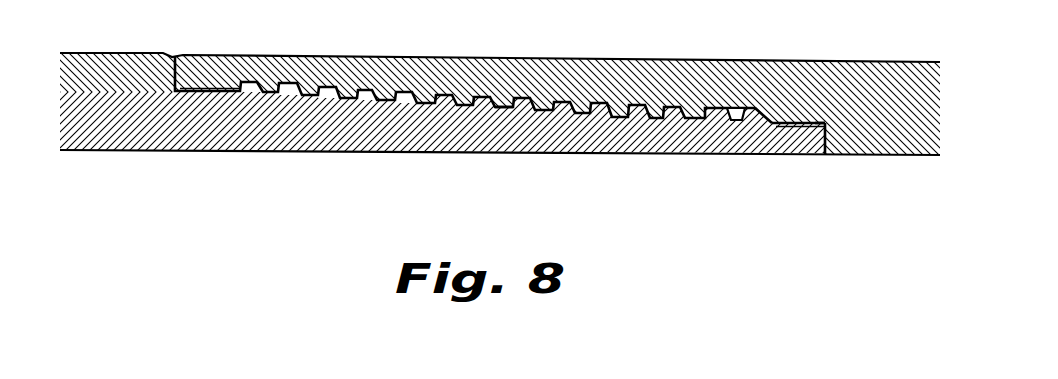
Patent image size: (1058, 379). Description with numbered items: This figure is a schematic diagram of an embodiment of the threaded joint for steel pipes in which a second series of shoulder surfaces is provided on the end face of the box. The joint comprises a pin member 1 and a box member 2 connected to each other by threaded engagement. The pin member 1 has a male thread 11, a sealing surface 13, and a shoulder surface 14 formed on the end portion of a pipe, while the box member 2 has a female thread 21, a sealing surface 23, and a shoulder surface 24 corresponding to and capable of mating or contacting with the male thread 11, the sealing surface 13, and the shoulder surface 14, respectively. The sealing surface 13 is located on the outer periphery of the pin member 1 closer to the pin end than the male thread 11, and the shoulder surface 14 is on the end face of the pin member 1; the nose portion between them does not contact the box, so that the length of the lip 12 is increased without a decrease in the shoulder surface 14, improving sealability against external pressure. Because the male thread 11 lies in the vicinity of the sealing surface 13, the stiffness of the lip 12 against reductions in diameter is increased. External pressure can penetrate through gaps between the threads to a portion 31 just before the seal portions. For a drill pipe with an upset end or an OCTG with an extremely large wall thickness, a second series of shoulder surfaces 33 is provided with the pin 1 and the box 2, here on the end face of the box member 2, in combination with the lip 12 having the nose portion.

The pin member 1 is at (300, 117).
The box member 2 is at (581, 80).
The male thread 11 is at (482, 112).
The lip 12 is at (797, 128).
The sealing surface 13 is at (765, 143).
The shoulder surface 14 is at (823, 152).
The female thread 21 is at (468, 103).
The sealing surface 23 is at (762, 119).
The shoulder surface 24 is at (826, 125).
The portion just before the seal portions 31 is at (737, 107).
The second series of shoulder surfaces 33 is at (190, 57).